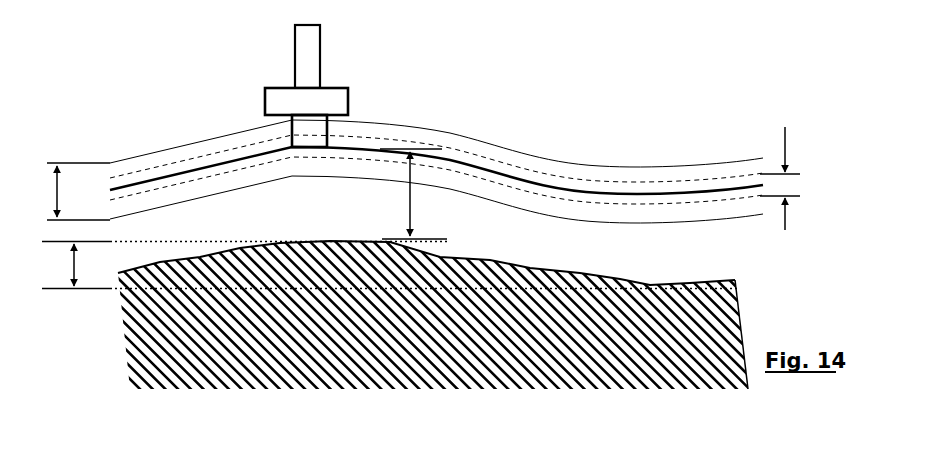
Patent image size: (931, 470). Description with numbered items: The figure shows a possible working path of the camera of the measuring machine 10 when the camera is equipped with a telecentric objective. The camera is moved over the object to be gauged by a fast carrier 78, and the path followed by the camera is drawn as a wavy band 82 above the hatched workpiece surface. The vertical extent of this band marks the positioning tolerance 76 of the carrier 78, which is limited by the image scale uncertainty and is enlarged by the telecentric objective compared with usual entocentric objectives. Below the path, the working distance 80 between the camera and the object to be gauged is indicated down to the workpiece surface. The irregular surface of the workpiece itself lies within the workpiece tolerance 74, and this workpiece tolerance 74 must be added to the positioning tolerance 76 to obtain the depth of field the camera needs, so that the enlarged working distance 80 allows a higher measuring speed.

The measuring machine 10 is at (288, 76).
The carrier 78 is at (307, 45).
The track layer / ballast surface 82 is at (143, 182).
The tolerance of the working distance 76 is at (64, 191).
The working distance 80 is at (413, 194).
The workpiece tolerance 74 is at (390, 265).